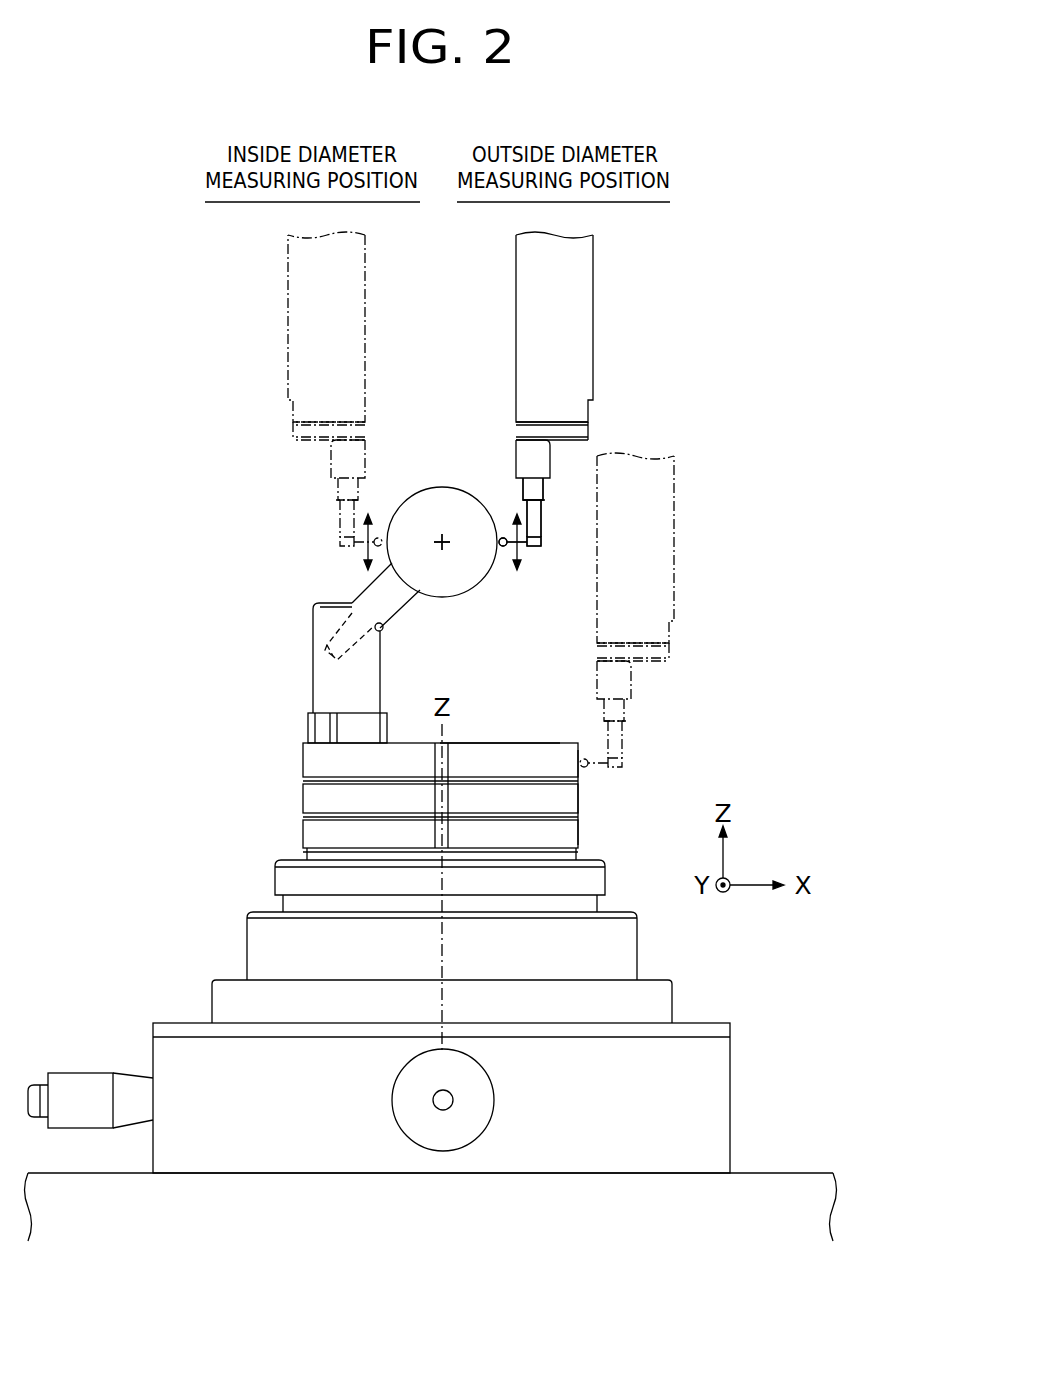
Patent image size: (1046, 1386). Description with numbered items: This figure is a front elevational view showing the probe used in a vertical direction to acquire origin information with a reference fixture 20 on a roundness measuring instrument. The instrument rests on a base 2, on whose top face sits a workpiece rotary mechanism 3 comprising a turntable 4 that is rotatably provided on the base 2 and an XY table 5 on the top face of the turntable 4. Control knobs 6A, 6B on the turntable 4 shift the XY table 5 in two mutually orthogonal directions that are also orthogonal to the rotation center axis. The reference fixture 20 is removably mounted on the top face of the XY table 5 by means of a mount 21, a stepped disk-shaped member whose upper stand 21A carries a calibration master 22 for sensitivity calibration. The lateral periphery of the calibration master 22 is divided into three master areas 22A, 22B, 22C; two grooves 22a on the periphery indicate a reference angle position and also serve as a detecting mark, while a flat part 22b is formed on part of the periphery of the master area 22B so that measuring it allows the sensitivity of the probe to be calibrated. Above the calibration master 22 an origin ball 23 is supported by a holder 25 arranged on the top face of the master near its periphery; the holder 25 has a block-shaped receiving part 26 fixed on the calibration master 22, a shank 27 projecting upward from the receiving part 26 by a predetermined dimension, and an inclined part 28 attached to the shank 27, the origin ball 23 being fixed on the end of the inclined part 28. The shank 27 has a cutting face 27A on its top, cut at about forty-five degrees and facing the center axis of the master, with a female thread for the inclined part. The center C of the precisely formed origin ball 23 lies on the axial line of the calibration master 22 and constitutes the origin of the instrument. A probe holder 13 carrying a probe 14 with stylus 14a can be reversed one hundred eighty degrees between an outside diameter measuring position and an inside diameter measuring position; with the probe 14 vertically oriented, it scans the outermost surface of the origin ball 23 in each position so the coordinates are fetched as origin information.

The base 2 is at (753, 1190).
The workpiece rotary mechanism 3 is at (477, 1059).
The turntable 4 is at (687, 1052).
The XY table 5 is at (657, 988).
The control knob 6A is at (60, 1087).
The control knob 6B is at (437, 1138).
The probe holder 13 is at (582, 297).
The probe 14 is at (537, 463).
The stylus 14a is at (503, 550).
The reference fixture 20 is at (257, 494).
The mount 21 is at (402, 914).
The upper stand 21A is at (290, 855).
The calibration master 22 is at (420, 780).
The master area 22A is at (310, 836).
The master area 22B is at (310, 797).
The master area 22C is at (310, 757).
The groove 22a is at (475, 752).
The flat part 22b is at (585, 800).
The origin ball 23 is at (440, 495).
The center C is at (446, 540).
The holder 25 is at (315, 649).
The receiving part 26 is at (301, 707).
The shank 27 is at (318, 621).
The cutting face 27A is at (383, 631).
The inclined part 28 is at (350, 600).